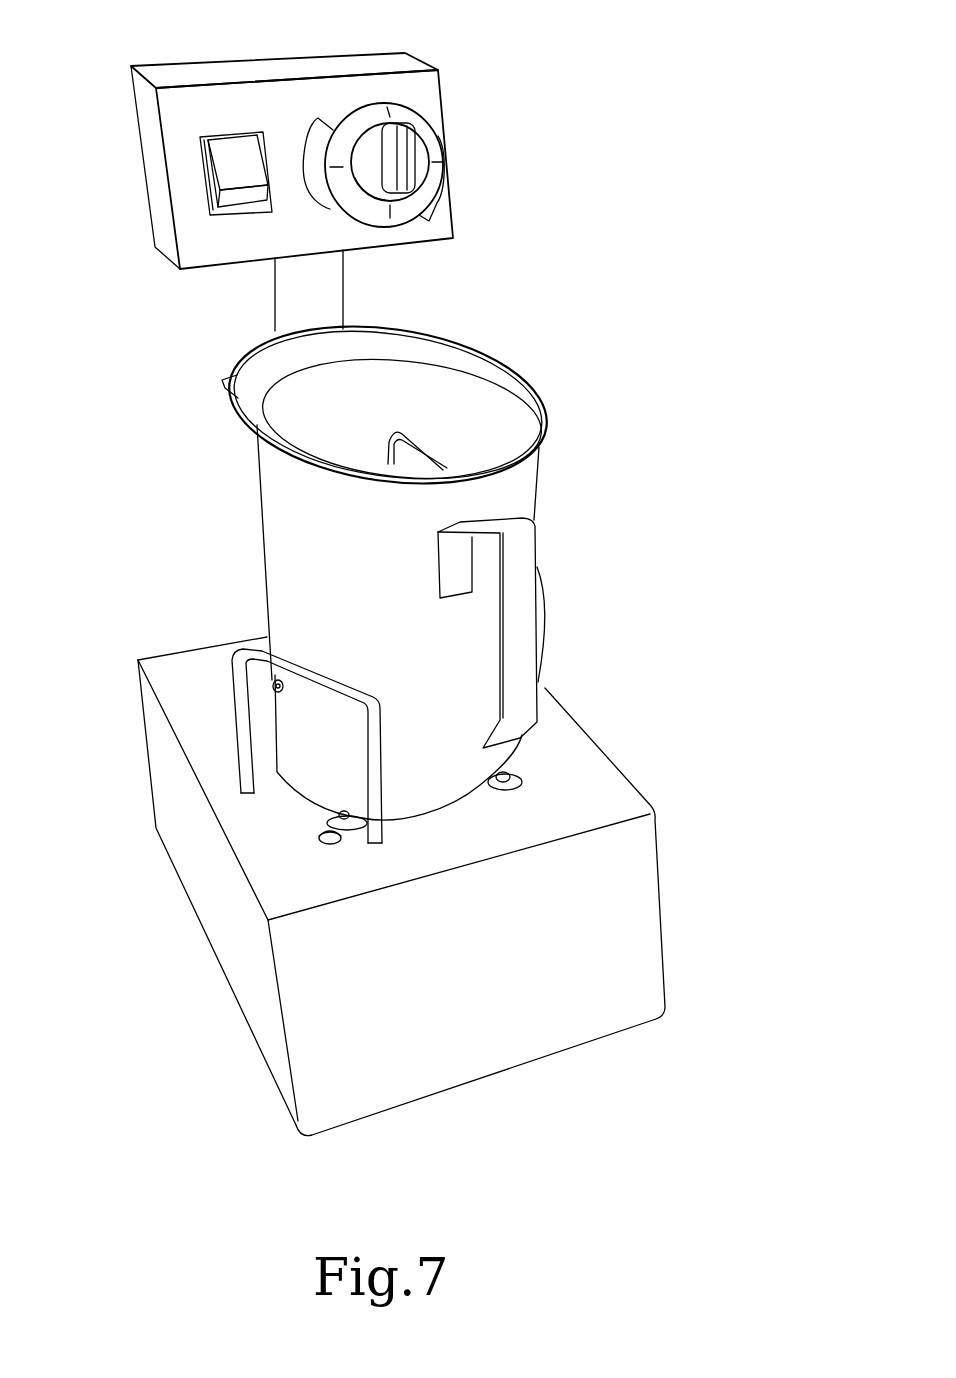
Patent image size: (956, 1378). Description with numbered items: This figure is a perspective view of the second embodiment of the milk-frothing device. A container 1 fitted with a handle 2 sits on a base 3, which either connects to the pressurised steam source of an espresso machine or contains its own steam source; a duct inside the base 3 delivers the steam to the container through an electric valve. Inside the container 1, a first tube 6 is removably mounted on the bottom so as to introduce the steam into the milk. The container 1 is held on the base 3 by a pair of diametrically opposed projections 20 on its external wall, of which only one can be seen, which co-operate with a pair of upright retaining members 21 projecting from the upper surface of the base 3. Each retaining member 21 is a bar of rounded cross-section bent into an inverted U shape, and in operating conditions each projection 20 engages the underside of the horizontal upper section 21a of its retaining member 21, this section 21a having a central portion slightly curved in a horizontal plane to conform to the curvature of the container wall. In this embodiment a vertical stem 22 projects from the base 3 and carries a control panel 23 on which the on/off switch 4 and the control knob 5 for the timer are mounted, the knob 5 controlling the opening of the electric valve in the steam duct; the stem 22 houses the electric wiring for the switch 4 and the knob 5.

The container 1 is at (233, 400).
The handle 2 is at (523, 653).
The base 3 is at (507, 1049).
The on/off switch 4 is at (240, 155).
The control knob 5 is at (378, 117).
The first tube 6 is at (415, 437).
The projection 20 is at (273, 688).
The retaining member 21 is at (238, 726).
The horizontal upper section 21a is at (235, 657).
The vertical stem 22 is at (305, 280).
The control panel 23 is at (160, 203).